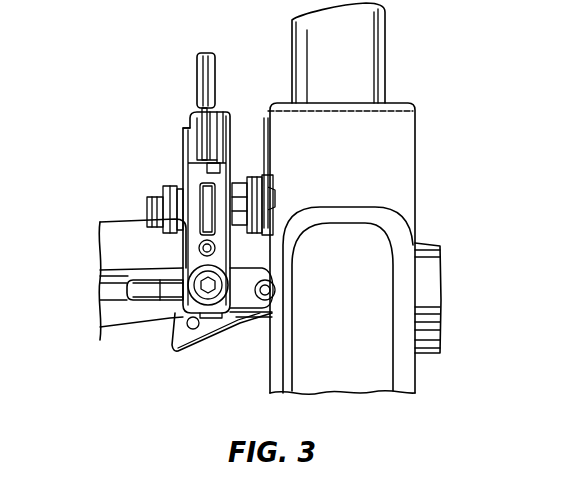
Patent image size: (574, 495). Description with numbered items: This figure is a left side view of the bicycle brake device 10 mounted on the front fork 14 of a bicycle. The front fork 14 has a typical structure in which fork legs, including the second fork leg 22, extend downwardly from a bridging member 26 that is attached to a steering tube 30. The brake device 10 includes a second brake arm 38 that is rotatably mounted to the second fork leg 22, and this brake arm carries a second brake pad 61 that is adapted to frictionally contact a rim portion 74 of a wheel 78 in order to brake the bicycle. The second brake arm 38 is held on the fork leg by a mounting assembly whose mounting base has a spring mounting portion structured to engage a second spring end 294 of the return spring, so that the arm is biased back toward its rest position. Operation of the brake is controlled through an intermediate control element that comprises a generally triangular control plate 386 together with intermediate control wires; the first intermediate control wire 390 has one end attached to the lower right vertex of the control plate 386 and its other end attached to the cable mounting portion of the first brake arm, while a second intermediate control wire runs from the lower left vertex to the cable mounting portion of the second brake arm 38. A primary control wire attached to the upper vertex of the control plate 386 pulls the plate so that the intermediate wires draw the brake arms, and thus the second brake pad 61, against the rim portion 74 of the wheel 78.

The bicycle brake device 10 is at (112, 73).
The front fork 14 is at (428, 173).
The second fork leg 22 is at (402, 376).
The bridging member 26 is at (407, 137).
The steering tube 30 is at (374, 43).
The second brake arm 38 is at (145, 245).
The second brake pad 61 is at (190, 366).
The rim portion 74 is at (115, 313).
The wheel 78 is at (81, 208).
The second spring end 294 is at (255, 178).
The control plate 386 is at (197, 80).
The first intermediate control wire 390 is at (198, 118).